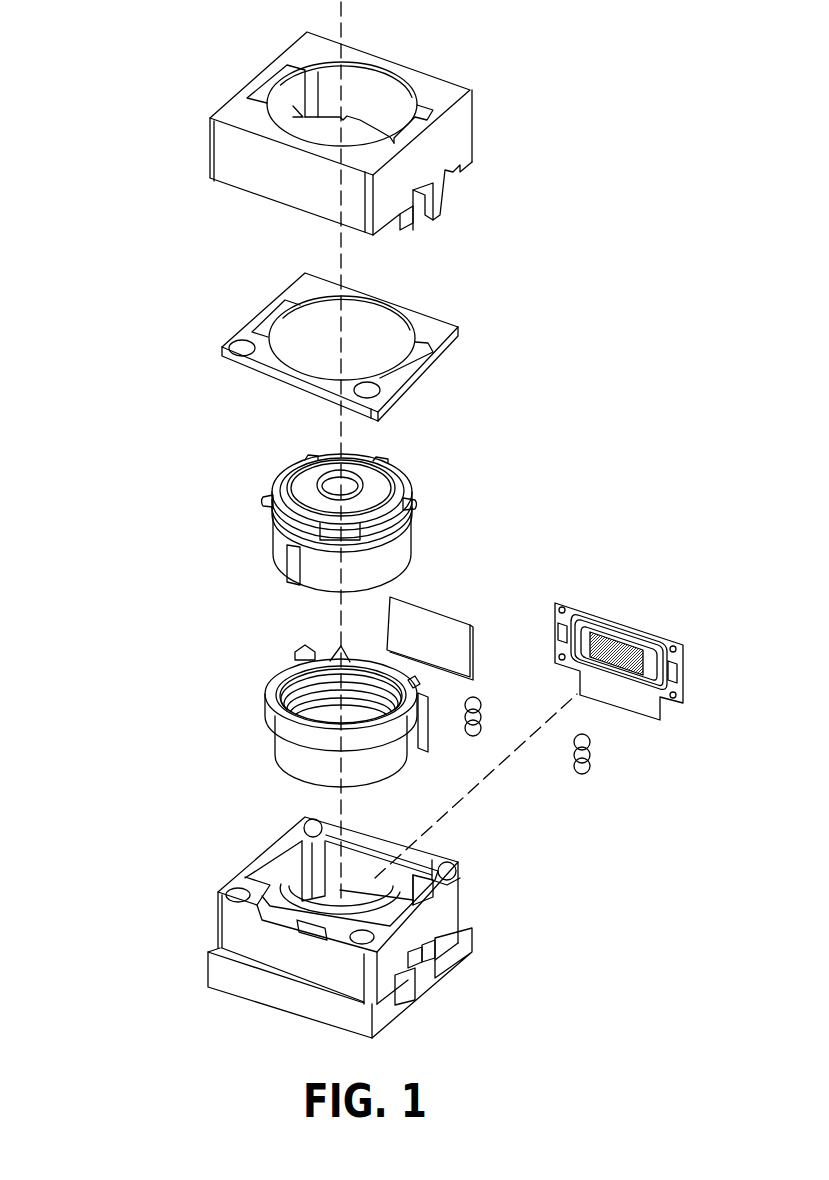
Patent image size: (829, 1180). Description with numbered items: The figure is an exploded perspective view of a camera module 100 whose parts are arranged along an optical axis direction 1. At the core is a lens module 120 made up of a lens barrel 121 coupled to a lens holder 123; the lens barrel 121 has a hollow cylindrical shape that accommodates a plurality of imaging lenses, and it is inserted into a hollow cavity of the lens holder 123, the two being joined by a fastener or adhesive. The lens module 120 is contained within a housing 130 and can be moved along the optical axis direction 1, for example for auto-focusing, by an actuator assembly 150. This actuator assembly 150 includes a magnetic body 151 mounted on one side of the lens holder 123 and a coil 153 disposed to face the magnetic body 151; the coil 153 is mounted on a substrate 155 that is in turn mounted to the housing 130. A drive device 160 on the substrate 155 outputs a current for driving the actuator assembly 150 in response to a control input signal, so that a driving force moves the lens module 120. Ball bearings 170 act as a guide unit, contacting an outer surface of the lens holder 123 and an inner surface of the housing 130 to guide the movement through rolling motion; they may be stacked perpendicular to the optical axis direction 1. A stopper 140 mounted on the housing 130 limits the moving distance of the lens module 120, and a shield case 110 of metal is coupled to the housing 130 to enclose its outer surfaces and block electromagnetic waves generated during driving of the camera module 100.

The camera module 100 is at (177, 28).
The optical axis direction 1 is at (342, 250).
The shield case 110 is at (455, 143).
The stopper 140 is at (430, 325).
The lens module 120 is at (173, 540).
The lens barrel 121 is at (282, 548).
The lens holder 123 is at (285, 750).
The actuator assembly 150 is at (681, 560).
The magnetic body 151 is at (453, 637).
The coil 153 is at (587, 613).
The substrate 155 is at (657, 633).
The drive device 160 is at (627, 668).
The ball bearings 170 is at (577, 773).
The housing 130 is at (447, 915).